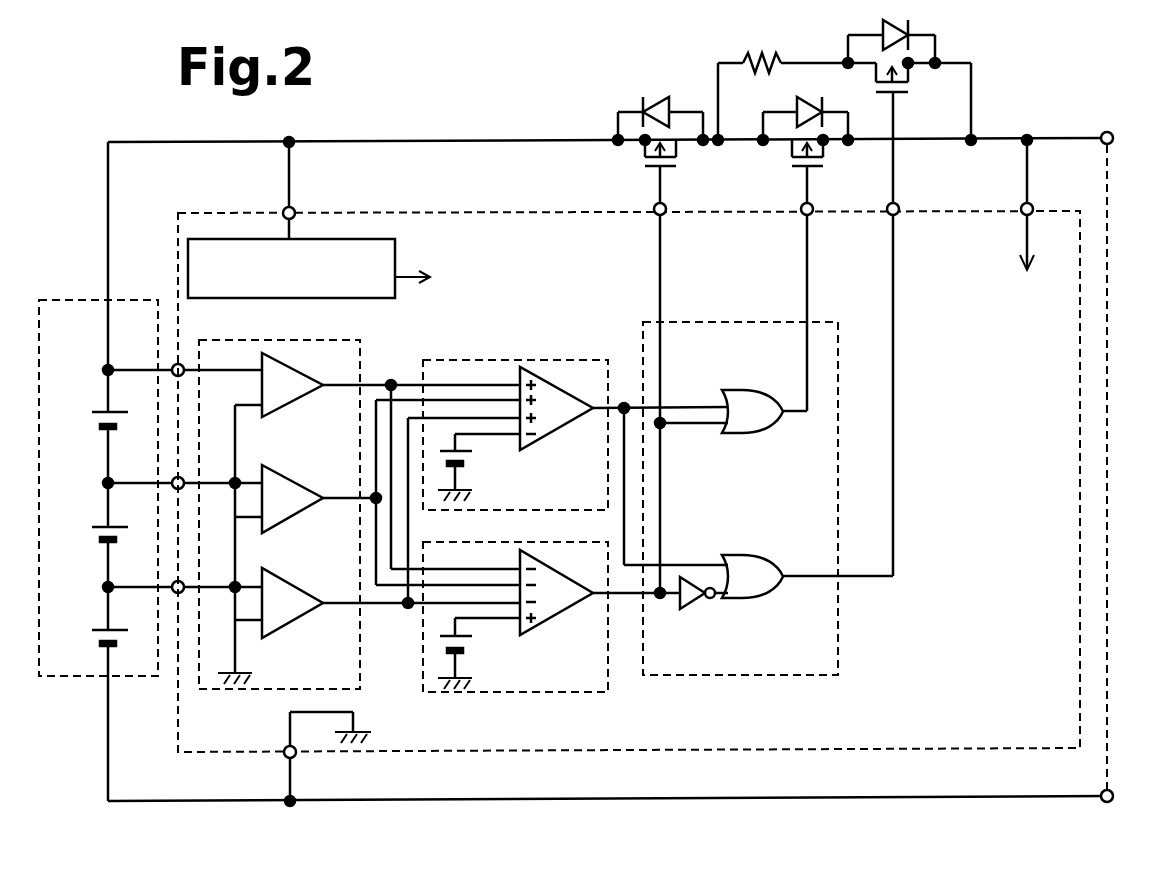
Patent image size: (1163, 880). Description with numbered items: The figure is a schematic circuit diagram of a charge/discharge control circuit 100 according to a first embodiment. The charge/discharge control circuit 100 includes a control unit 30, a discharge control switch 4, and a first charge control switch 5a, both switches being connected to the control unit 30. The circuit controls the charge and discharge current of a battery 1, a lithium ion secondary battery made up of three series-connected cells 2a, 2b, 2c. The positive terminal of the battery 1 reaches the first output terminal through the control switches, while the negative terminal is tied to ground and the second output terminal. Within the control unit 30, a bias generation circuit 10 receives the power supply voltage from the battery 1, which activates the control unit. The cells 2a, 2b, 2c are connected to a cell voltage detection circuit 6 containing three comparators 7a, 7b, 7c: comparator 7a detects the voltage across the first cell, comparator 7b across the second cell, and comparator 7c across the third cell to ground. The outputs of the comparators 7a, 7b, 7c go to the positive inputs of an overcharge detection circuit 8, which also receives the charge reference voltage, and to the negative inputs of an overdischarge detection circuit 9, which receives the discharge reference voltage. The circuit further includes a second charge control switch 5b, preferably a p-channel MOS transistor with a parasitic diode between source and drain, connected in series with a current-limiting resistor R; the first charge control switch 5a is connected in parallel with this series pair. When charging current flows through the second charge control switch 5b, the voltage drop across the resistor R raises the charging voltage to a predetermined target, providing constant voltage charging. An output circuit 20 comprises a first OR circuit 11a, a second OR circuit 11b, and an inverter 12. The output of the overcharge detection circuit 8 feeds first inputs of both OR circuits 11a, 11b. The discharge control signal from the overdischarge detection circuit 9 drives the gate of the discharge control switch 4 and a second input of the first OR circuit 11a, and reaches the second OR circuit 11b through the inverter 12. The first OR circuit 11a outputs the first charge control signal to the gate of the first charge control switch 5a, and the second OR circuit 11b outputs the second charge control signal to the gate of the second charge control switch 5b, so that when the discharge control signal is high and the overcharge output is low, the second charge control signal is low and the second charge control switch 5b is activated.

The charge/discharge control circuit 100 is at (977, 811).
The battery 1 is at (88, 297).
The cell 2a is at (100, 410).
The cell 2b is at (100, 525).
The cell 2c is at (100, 628).
The discharge control switch 4 is at (640, 152).
The first charge control switch 5a is at (790, 152).
The second charge control switch 5b is at (912, 70).
The resistor R is at (762, 58).
The cell voltage detection circuit 6 is at (364, 352).
The comparator 7a is at (292, 398).
The comparator 7b is at (292, 510).
The comparator 7c is at (292, 613).
The overcharge detection circuit 8 is at (476, 359).
The overdischarge detection circuit 9 is at (450, 693).
The bias generation circuit 10 is at (256, 300).
The first OR circuit 11a is at (746, 389).
The second OR circuit 11b is at (746, 554).
The inverter 12 is at (690, 605).
The output circuit 20 is at (730, 321).
The control unit 30 is at (540, 211).